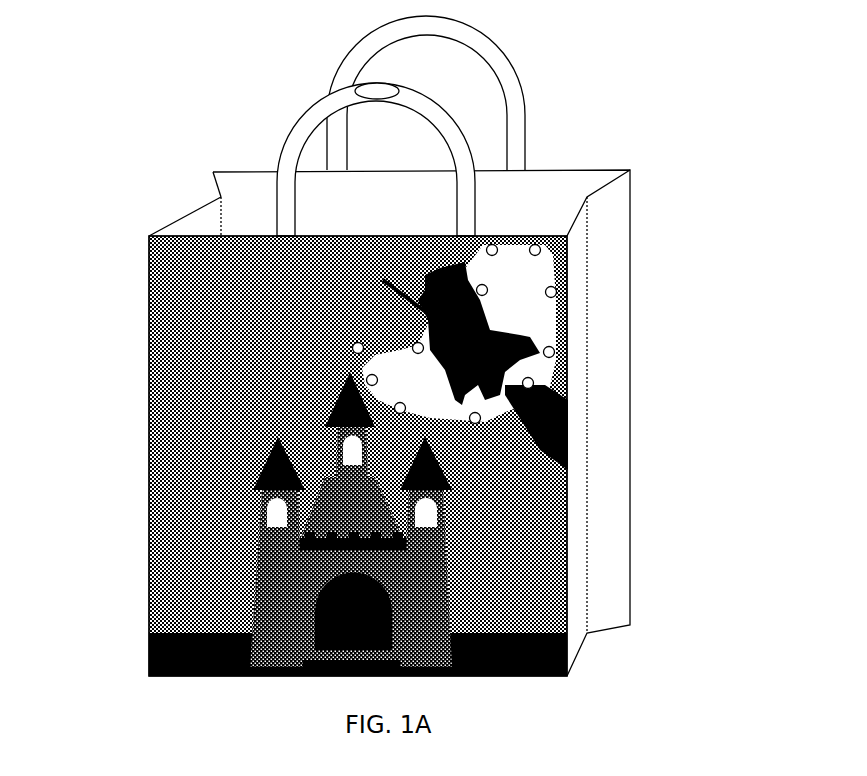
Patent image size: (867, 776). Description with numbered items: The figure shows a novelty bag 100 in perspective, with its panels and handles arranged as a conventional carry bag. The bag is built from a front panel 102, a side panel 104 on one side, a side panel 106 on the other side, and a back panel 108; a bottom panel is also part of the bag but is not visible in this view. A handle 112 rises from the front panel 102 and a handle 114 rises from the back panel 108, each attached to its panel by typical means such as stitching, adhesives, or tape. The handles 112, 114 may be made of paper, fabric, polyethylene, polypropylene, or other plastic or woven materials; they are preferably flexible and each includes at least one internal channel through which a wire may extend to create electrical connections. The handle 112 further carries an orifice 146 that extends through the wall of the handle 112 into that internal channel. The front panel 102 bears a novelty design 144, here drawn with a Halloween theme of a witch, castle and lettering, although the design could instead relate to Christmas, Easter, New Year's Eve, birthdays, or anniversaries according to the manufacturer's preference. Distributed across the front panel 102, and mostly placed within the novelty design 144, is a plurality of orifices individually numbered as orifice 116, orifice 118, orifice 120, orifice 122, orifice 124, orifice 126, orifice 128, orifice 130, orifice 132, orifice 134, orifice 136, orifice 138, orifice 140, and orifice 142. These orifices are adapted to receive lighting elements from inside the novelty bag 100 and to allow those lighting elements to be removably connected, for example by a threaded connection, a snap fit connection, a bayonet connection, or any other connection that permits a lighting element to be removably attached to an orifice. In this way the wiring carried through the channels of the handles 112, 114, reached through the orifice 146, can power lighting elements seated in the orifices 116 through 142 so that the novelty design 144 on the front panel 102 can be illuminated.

The novelty bag 100 is at (399, 351).
The front panel 102 is at (404, 432).
The side panel 104 is at (607, 545).
The side panel 106 is at (180, 220).
The back panel 108 is at (257, 183).
The handle 112 is at (353, 137).
The handle 114 is at (503, 46).
The orifice 116 is at (280, 515).
The orifice 118 is at (353, 455).
The orifice 120 is at (432, 513).
The orifice 122 is at (556, 352).
The orifice 124 is at (558, 292).
The orifice 126 is at (538, 244).
The orifice 128 is at (495, 244).
The orifice 130 is at (479, 284).
The orifice 132 is at (414, 343).
The orifice 134 is at (357, 342).
The orifice 136 is at (378, 379).
The orifice 138 is at (406, 406).
The orifice 140 is at (478, 424).
The orifice 142 is at (535, 384).
The novelty design 144 is at (265, 403).
The orifice 146 is at (362, 90).